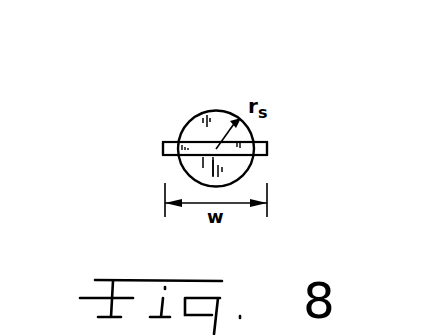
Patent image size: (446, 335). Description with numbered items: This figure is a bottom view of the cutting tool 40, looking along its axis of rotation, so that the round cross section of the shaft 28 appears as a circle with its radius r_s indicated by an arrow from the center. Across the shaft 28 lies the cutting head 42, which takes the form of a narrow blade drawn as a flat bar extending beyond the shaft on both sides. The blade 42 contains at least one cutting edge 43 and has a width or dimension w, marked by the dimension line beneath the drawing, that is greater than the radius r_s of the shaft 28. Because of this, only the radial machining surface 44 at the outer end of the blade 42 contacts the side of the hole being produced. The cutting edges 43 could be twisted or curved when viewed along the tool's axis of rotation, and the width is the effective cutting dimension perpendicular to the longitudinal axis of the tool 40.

The shaft 28 is at (240, 166).
The cutting tool 40 is at (230, 93).
The cutting head 42 is at (172, 142).
The cutting edge 43 is at (198, 140).
The radial machining surface 44 is at (268, 148).